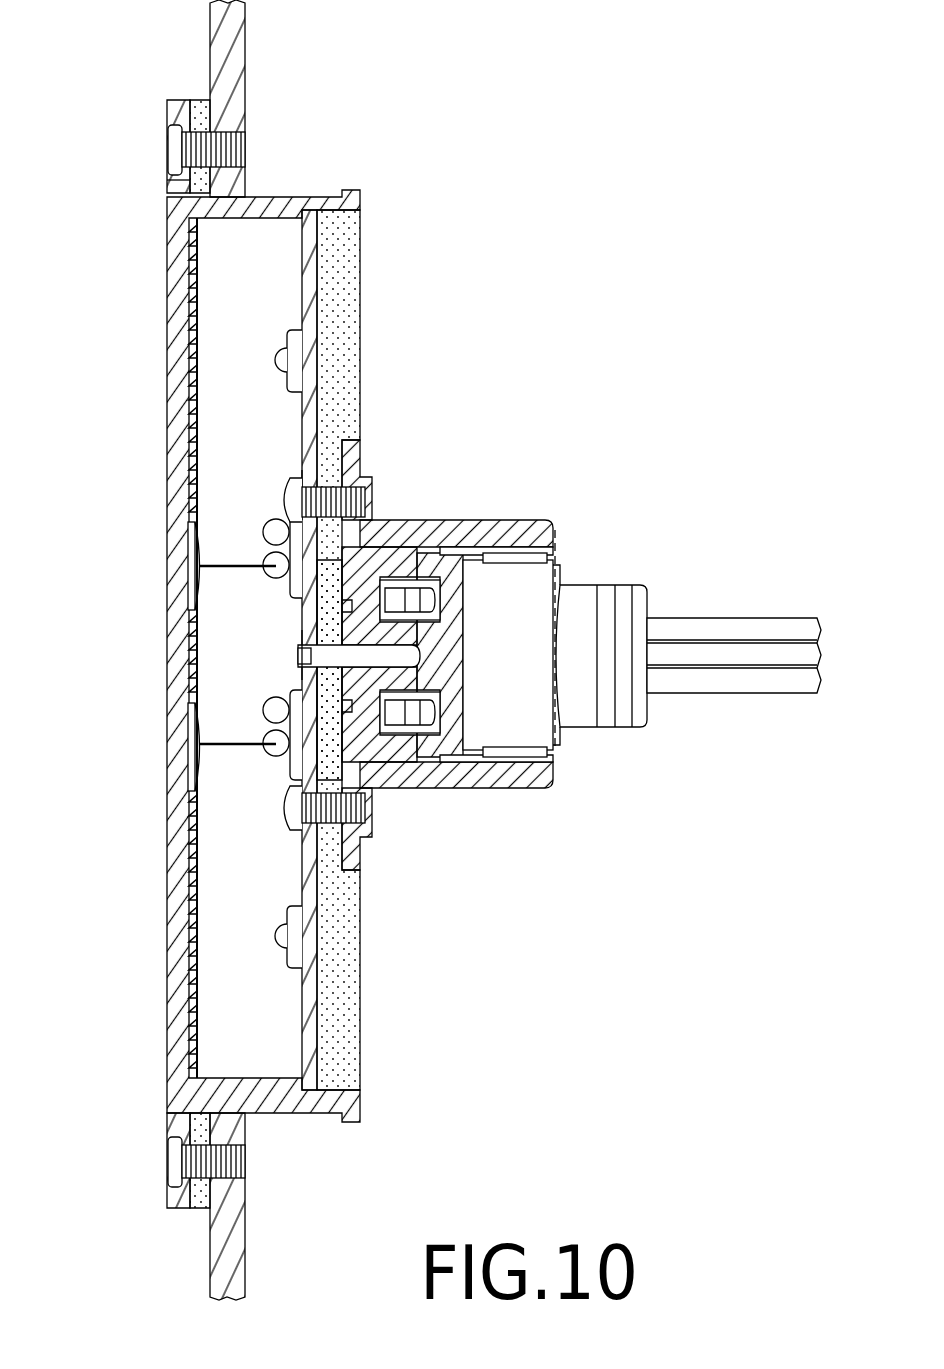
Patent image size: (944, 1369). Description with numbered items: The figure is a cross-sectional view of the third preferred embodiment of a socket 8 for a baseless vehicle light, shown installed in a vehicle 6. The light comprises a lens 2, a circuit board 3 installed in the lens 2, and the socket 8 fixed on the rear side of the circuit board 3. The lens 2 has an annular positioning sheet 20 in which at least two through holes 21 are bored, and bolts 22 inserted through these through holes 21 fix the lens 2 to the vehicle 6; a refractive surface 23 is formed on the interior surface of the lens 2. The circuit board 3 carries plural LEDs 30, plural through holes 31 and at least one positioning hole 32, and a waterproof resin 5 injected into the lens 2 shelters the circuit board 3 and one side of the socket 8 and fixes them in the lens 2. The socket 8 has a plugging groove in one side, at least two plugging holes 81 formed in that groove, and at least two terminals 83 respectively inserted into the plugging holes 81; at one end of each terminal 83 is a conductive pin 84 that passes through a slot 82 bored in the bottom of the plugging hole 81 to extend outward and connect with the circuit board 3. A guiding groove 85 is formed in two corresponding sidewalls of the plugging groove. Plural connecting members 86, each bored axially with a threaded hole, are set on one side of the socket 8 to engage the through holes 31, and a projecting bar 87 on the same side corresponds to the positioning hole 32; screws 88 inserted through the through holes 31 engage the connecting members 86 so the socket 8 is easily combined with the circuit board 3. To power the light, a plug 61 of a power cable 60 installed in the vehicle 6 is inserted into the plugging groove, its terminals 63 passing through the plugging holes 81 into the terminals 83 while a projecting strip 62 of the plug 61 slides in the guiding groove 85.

The lens 2 is at (292, 194).
The circuit board 3 is at (310, 243).
The waterproof resin 5 is at (348, 270).
The vehicle 6 is at (228, 38).
The socket 8 is at (470, 520).
The annular positioning sheet 20 is at (178, 109).
The through hole 21 is at (177, 180).
The bolt 22 is at (178, 148).
The refractive surface 23 is at (190, 272).
The LED 30 is at (283, 360).
The through hole 31 is at (312, 470).
The positioning hole 32 is at (303, 640).
The power cable 60 is at (770, 628).
The plug 61 is at (540, 613).
The projecting strip 62 is at (558, 750).
The terminal 63 is at (420, 600).
The plugging hole 81 is at (432, 748).
The slot 82 is at (363, 750).
The terminal 83 is at (412, 748).
The conductive pin 84 is at (330, 740).
The guiding groove 85 is at (510, 760).
The connecting member 86 is at (345, 489).
The projecting bar 87 is at (330, 656).
The screw 88 is at (293, 494).